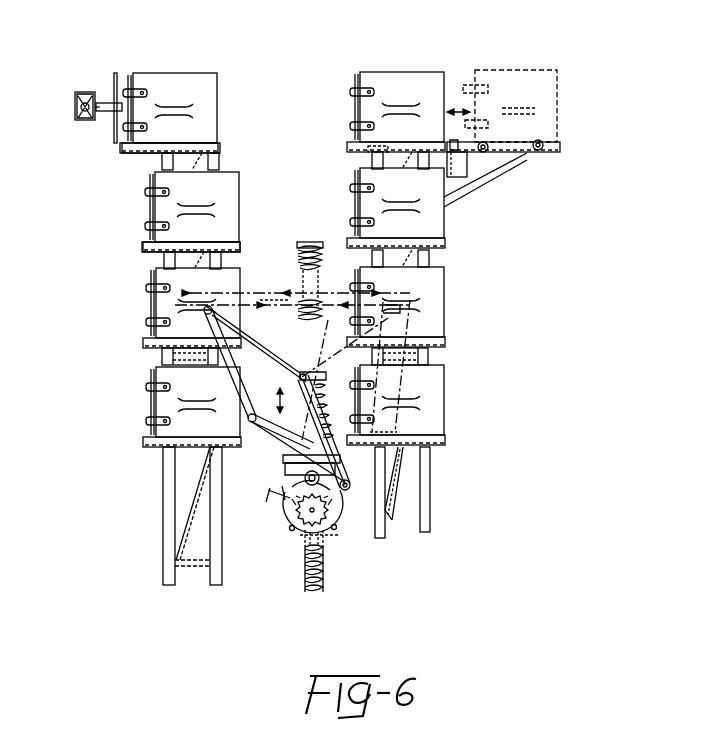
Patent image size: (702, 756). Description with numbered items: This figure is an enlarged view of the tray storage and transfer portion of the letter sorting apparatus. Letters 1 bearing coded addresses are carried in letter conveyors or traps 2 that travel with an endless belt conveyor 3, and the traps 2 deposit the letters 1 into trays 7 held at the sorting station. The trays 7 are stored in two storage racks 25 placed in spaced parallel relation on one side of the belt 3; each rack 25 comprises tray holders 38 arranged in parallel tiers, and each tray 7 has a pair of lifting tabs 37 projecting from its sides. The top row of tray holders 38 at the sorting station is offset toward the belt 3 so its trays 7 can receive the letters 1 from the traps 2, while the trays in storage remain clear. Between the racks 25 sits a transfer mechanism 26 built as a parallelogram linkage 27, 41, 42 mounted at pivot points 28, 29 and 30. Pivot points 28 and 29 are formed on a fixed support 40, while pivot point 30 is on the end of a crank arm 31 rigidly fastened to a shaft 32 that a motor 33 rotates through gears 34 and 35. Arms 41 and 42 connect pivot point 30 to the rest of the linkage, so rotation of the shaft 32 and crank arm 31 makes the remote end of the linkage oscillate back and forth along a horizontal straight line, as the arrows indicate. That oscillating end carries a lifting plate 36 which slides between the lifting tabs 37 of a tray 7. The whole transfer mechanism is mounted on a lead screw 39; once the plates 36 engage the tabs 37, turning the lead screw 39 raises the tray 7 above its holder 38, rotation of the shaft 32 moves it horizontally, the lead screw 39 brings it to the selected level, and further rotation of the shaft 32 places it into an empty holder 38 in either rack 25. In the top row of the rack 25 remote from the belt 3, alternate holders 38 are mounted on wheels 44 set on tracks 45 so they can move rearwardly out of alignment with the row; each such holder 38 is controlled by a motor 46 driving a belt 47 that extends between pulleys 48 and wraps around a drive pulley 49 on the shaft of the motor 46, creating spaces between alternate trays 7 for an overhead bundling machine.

The letters 1 is at (117, 73).
The letter conveyors or traps 2 is at (104, 104).
The endless belt conveyor 3 is at (105, 117).
The trays 7 is at (203, 87).
The storage racks 25 is at (172, 516).
The transfer mechanisms 26 is at (327, 235).
The parallelogram linkage 27 is at (245, 370).
The pivot point 28 is at (290, 466).
The pivot point 29 is at (322, 396).
The pivot point 30 is at (345, 486).
The crank arm 31 is at (335, 530).
The shaft 32 is at (280, 494).
The motor 33 is at (335, 533).
The gear 34 is at (310, 518).
The gear 35 is at (292, 527).
The lifting plate 36 is at (212, 308).
The lifting tabs 37 is at (207, 215).
The tray holders 38 is at (218, 143).
The lead screw 39 is at (320, 575).
The fixed support 40 is at (356, 457).
The arm 41 is at (317, 378).
The arm 42 is at (253, 445).
The wheels 44 is at (540, 132).
The tracks 45 is at (561, 148).
The motor 46 is at (452, 170).
The belt 47 is at (503, 147).
The pulleys 48 is at (378, 145).
The drive pulley 49 is at (453, 148).